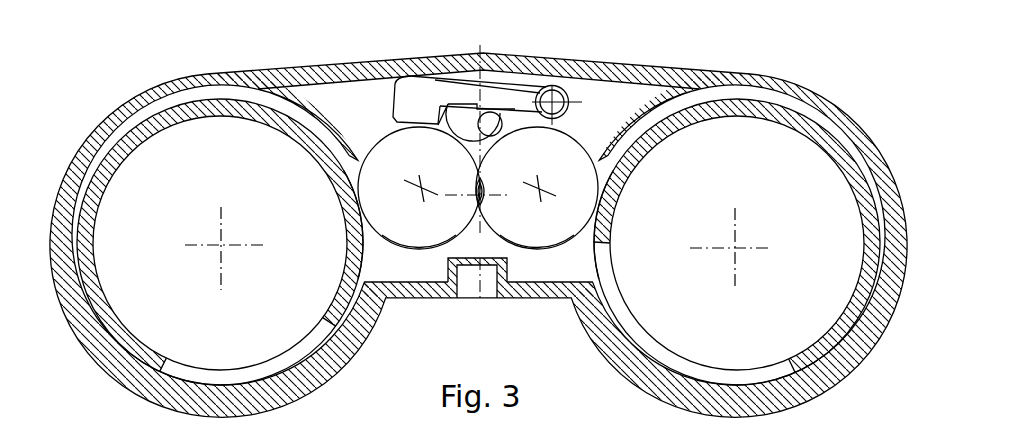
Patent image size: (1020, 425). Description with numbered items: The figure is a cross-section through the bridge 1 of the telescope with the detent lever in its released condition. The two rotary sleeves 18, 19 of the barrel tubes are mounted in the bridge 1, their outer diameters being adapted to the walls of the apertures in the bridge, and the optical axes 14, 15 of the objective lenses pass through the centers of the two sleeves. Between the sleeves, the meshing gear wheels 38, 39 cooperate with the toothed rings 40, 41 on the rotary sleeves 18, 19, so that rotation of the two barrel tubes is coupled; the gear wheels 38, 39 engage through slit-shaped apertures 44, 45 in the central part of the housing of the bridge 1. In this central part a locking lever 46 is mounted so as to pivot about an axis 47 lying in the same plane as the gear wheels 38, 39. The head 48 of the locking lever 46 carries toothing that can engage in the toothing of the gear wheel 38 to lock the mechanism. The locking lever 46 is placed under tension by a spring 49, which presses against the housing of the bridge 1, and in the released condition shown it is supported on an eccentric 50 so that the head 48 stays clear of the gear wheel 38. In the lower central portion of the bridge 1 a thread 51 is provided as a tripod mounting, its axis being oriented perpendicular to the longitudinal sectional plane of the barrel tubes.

The bridge 1 is at (360, 350).
The optical axis of objective lens 14 is at (227, 250).
The optical axis of objective lens 15 is at (735, 250).
The rotary sleeve 18 is at (96, 266).
The rotary sleeve 19 is at (877, 247).
The gear wheel 38 is at (395, 240).
The gear wheel 39 is at (530, 237).
The toothed ring 40 is at (352, 195).
The toothed ring 41 is at (600, 203).
The slit-shaped aperture 44 is at (370, 200).
The slit-shaped aperture 45 is at (585, 202).
The locking lever 46 is at (415, 95).
The axis 47 is at (570, 72).
The head of locking lever 48 is at (420, 108).
The spring 49 is at (528, 78).
The eccentric 50 is at (496, 135).
The thread 51 is at (463, 287).